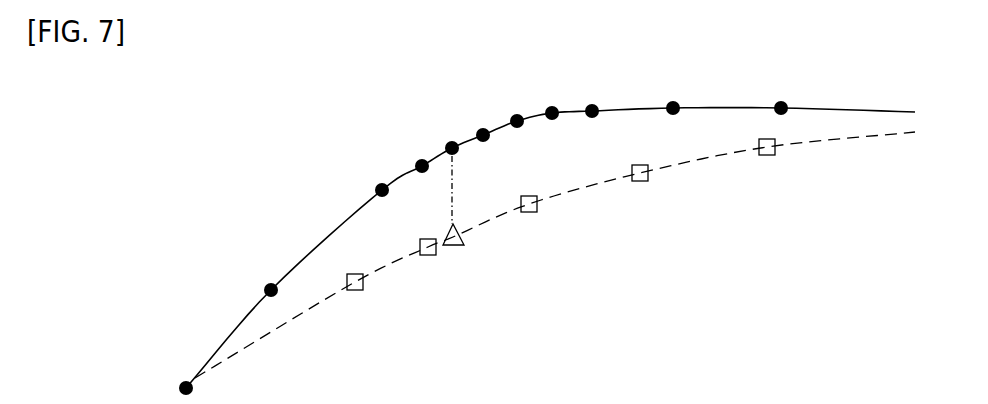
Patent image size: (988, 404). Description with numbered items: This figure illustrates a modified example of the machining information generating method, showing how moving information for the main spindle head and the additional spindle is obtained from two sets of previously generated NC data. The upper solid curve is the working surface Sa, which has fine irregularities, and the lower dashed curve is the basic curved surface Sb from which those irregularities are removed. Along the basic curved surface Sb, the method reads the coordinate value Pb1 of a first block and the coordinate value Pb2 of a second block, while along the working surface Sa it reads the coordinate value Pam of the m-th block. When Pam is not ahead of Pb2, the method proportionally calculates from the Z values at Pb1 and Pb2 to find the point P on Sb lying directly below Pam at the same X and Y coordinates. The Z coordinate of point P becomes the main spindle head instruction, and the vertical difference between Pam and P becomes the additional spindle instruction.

The working surface Sa is at (845, 108).
The basic curved surface Sb is at (803, 142).
The coordinate value of m-th block on Sa Pam is at (452, 145).
The coordinate value of first block on Sb Pb1 is at (425, 255).
The coordinate value of second block on Sb Pb2 is at (538, 210).
The point on Sb corresponding to Pam P is at (457, 248).